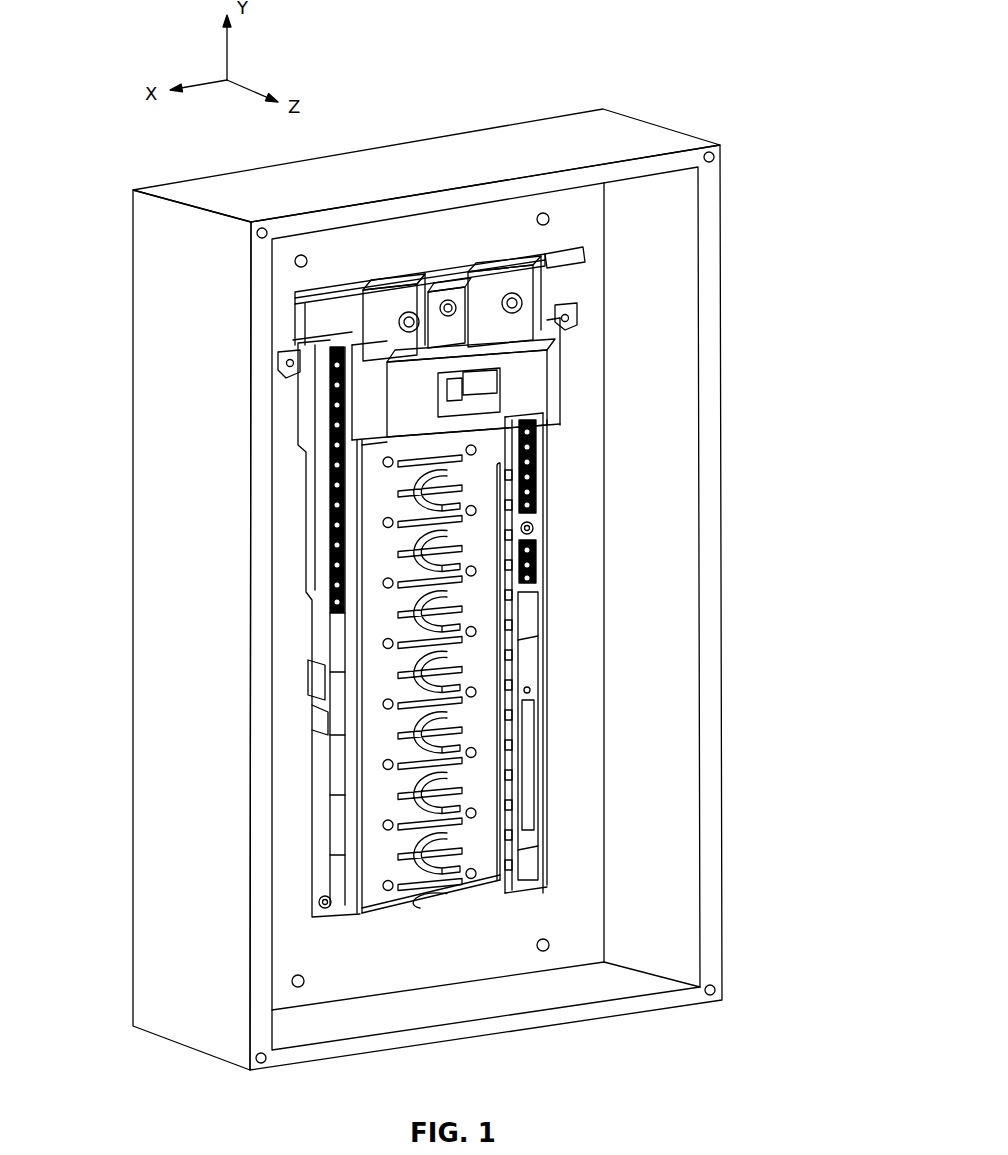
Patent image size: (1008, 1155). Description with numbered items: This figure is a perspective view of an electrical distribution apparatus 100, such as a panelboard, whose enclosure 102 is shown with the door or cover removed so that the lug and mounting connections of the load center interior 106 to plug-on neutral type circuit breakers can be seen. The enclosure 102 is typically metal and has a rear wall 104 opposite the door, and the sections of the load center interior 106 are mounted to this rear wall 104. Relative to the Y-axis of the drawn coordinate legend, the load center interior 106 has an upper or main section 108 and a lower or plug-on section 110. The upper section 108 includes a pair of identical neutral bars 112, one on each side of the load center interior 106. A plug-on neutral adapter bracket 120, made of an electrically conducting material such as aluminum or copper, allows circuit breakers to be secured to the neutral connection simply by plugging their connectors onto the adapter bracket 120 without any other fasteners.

The electrical distribution apparatus 100 is at (614, 77).
The enclosure 102 is at (720, 303).
The rear wall 104 is at (587, 373).
The load center interior 106 is at (312, 290).
The upper section 108 is at (552, 467).
The lower section 110 is at (557, 745).
The neutral bars 112 is at (327, 505).
The plug-on neutral adapter bracket 120 is at (538, 533).